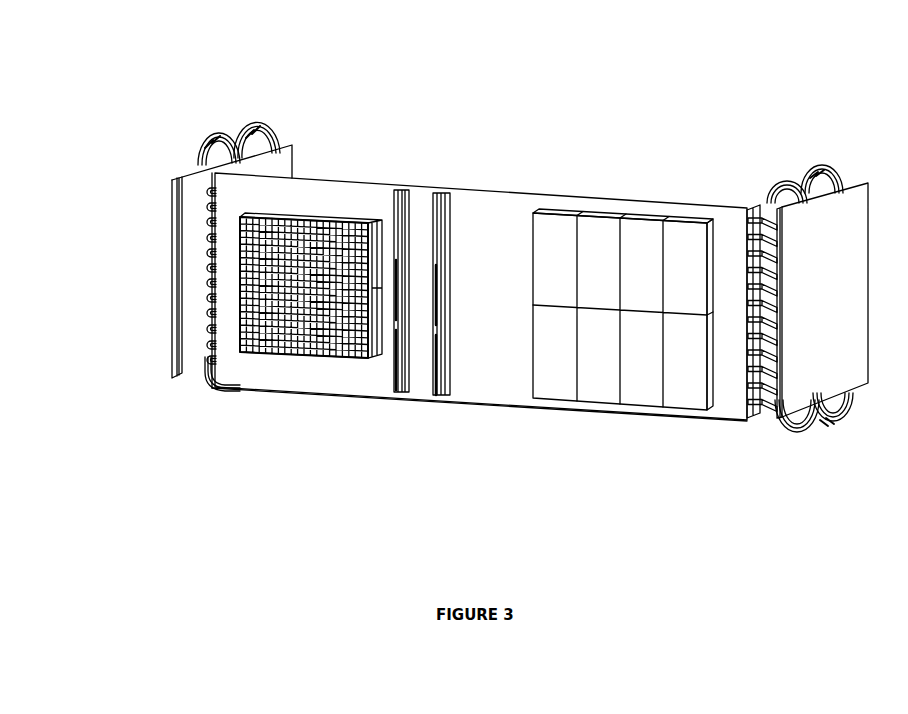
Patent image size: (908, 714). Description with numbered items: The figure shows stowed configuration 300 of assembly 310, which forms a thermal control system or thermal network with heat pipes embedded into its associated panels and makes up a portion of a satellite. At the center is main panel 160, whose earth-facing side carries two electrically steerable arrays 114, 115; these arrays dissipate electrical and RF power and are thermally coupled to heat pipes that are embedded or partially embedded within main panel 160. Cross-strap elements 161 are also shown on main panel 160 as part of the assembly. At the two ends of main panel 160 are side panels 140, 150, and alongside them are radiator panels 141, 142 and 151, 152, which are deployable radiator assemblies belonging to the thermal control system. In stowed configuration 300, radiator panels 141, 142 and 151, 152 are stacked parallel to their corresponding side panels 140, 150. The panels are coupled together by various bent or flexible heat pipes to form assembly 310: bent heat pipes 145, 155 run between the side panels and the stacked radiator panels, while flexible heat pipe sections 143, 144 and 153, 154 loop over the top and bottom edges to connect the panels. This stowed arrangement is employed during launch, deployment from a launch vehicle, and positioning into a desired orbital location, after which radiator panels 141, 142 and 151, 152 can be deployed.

The stowed configuration 300 is at (124, 38).
The assembly 310 is at (484, 134).
The electrically steerable array 114 is at (310, 213).
The electrically steerable array 115 is at (533, 346).
The main panel 160 is at (508, 238).
The cross-strap elements 161 is at (434, 318).
The side panel 140 is at (281, 167).
The radiator panel 141 is at (170, 195).
The radiator panel 142 is at (181, 237).
The flexible heat pipe section 143 is at (273, 126).
The flexible heat pipe section 144 is at (205, 389).
The bent heat pipe 145 is at (204, 283).
The side panel 150 is at (756, 207).
The radiator panel 151 is at (853, 247).
The radiator panel 152 is at (782, 370).
The flexible heat pipe section 153 is at (844, 170).
The flexible heat pipe section 154 is at (773, 433).
The bent heat pipe 155 is at (759, 341).